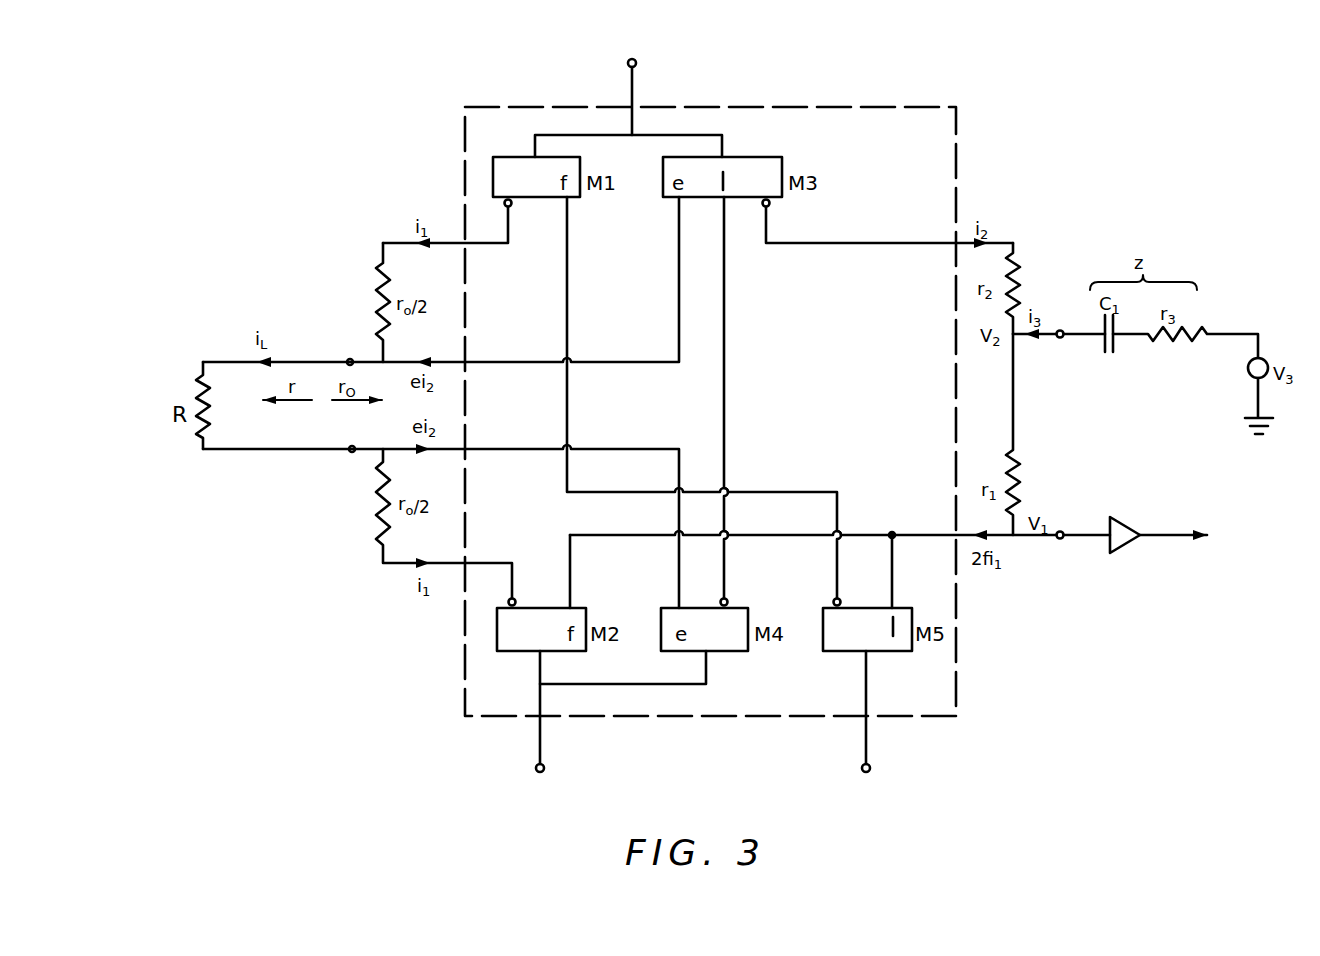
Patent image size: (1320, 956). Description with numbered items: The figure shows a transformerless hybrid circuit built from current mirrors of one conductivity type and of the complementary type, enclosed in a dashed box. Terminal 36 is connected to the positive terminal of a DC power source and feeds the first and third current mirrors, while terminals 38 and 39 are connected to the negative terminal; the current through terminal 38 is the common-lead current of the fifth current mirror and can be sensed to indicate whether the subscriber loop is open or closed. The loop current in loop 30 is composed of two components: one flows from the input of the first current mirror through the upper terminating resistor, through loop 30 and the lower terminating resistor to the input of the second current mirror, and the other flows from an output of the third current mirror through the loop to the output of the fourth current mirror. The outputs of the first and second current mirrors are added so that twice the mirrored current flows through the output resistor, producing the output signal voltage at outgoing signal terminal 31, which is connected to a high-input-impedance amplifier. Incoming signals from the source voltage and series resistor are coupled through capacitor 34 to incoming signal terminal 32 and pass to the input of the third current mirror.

The loop 30 is at (255, 425).
The outgoing signal terminal 31 is at (1060, 540).
The incoming signal terminal 32 is at (1058, 338).
The capacitor 34 is at (1110, 356).
The terminal 36 is at (636, 62).
The terminal 38 is at (870, 770).
The terminal 39 is at (544, 770).